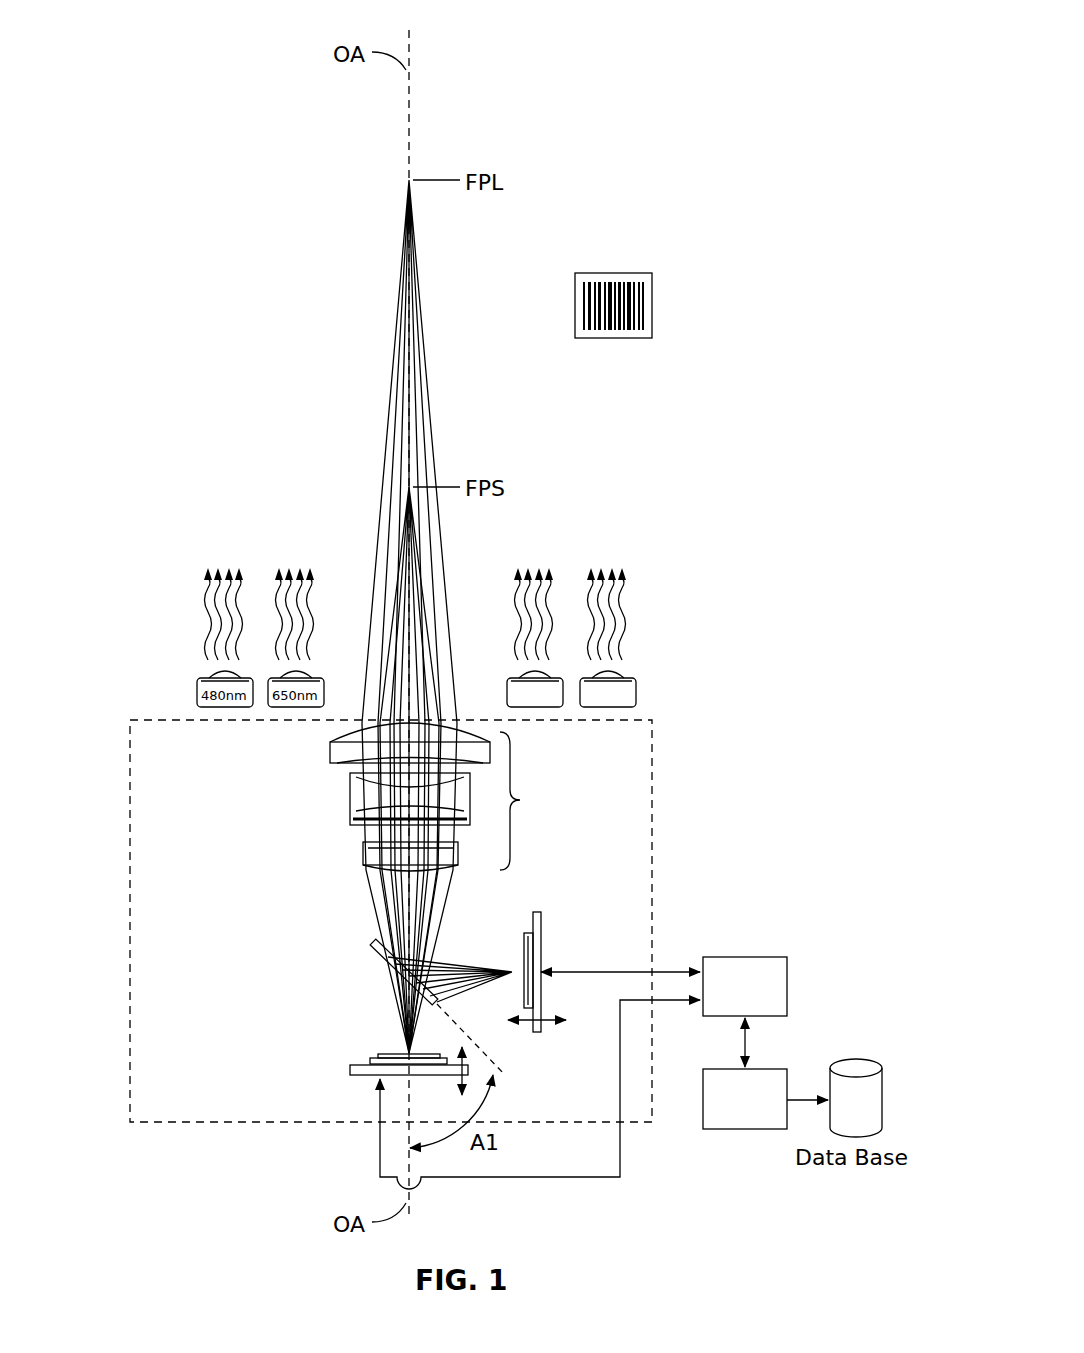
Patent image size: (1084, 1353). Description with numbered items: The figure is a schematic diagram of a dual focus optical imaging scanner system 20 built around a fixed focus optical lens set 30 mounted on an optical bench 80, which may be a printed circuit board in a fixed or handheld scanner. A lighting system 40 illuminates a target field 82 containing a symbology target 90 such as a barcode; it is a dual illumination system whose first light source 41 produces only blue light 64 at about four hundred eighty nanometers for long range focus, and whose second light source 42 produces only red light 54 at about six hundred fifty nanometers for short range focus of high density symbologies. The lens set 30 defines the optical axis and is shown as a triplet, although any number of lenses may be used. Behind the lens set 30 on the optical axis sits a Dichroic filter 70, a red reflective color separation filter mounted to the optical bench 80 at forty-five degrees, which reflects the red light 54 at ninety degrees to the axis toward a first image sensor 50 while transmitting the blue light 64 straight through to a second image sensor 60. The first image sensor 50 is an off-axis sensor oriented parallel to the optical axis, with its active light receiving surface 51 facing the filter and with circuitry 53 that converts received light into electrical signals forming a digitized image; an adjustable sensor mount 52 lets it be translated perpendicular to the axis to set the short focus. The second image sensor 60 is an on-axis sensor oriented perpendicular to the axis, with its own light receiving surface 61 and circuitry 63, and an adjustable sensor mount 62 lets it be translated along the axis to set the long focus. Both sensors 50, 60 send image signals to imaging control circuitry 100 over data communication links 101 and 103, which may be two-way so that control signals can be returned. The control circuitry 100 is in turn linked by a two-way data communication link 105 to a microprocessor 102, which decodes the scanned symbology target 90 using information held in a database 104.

The dual focus optical imaging scanner system 20 is at (168, 28).
The fixed focus optical lens set 30 is at (444, 797).
The lighting system 40 is at (588, 666).
The first light source 41 is at (638, 693).
The second light source 42 is at (507, 693).
The first image sensor 50 is at (540, 940).
The active light receiving surface 51 is at (522, 945).
The adjustable sensor mount 52 is at (545, 1022).
The circuitry 53 is at (540, 922).
The red light 54 is at (392, 585).
The second image sensor 60 is at (350, 1070).
The active light receiving surface 61 is at (375, 1052).
The adjustable sensor mount 62 is at (458, 1085).
The circuitry 63 is at (360, 1079).
The blue light 64 is at (397, 436).
The Dichroic filter 70 is at (378, 948).
The optical bench 80 is at (180, 718).
The target field 82 is at (331, 194).
The symbology target 90 is at (612, 273).
The imaging control circuitry 100 is at (727, 998).
The data communication link 101 is at (602, 970).
The microprocessor 102 is at (727, 1111).
The data communication link 103 is at (555, 1178).
The database 104 is at (836, 1111).
The two-way data communication link 105 is at (748, 1045).